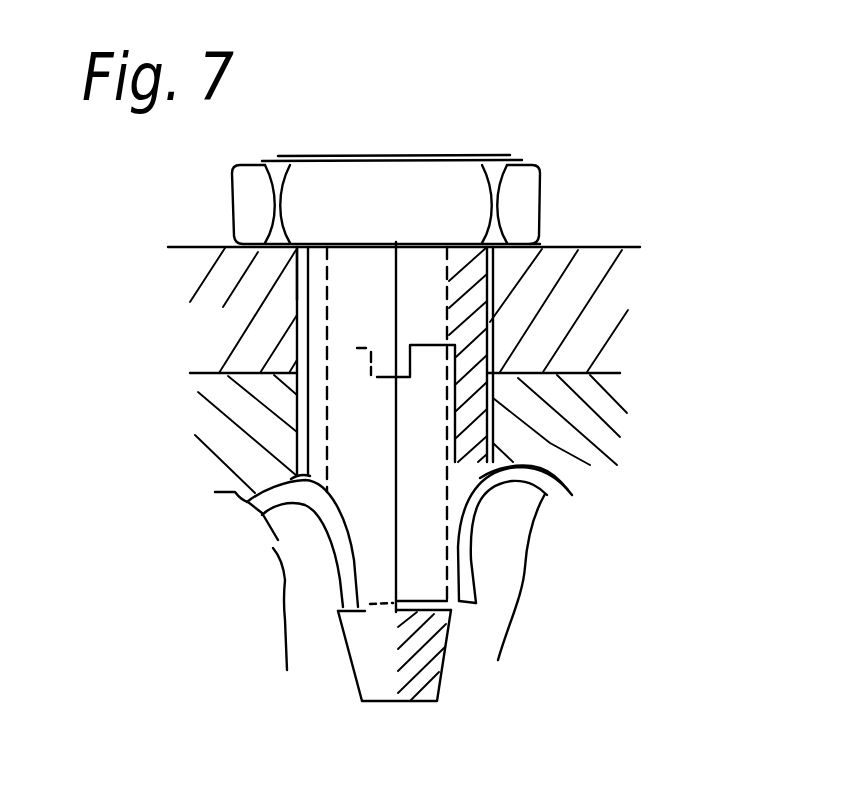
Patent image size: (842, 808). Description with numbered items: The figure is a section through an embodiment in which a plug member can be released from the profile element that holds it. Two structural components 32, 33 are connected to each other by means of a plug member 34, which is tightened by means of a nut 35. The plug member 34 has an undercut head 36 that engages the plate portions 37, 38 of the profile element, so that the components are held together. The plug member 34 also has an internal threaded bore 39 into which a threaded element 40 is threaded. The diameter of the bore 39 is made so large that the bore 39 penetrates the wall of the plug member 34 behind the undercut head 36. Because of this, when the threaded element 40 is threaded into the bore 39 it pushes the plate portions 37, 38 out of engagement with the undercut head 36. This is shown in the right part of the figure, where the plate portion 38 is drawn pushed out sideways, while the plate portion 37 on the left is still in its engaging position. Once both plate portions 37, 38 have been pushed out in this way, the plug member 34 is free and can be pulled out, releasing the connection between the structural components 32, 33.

The structural component 32 is at (625, 412).
The structural component 33 is at (600, 323).
The plug member 34 is at (346, 322).
The nut 35 is at (298, 280).
The undercut head 36 is at (365, 664).
The plate portion 37 is at (343, 557).
The plate portion 38 is at (470, 568).
The internal threaded bore 39 is at (452, 292).
The threaded element 40 is at (422, 442).